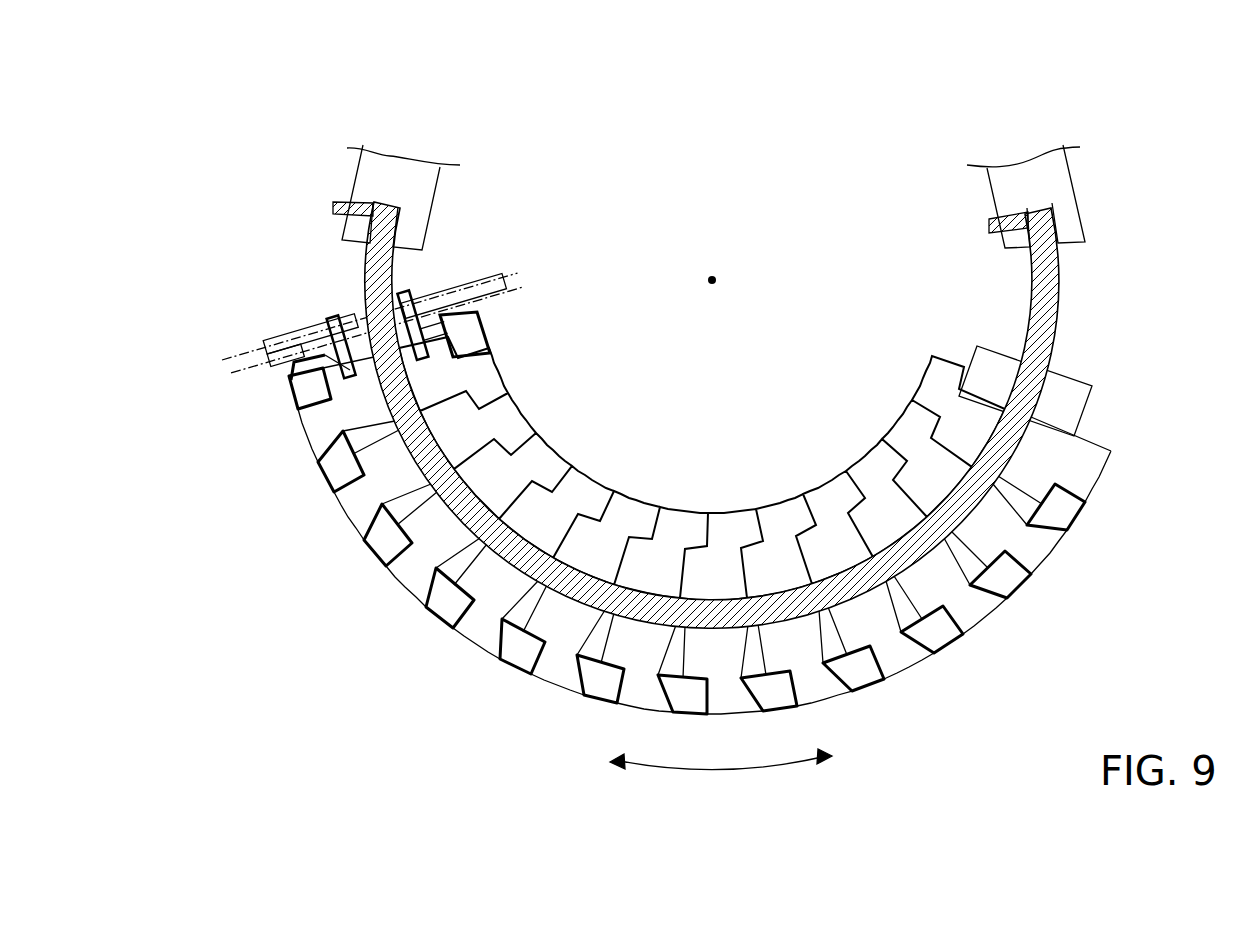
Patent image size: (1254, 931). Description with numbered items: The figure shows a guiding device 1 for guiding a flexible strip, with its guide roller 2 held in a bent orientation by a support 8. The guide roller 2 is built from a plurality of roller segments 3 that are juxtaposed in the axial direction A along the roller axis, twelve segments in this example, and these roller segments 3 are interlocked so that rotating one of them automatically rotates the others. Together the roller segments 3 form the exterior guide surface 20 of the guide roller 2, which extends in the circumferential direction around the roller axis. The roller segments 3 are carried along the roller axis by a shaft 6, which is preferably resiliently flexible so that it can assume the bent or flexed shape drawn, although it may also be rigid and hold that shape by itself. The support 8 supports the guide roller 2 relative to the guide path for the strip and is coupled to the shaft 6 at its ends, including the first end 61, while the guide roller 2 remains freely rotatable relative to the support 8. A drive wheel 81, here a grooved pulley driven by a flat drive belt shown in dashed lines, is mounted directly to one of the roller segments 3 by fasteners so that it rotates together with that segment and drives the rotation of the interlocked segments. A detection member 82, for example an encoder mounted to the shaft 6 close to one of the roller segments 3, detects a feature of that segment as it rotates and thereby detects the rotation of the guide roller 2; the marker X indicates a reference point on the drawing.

The guiding device 1 is at (214, 166).
The guide roller 2 is at (338, 580).
The roller segments 3 is at (547, 455).
The shaft 6 is at (1058, 318).
The support 8 is at (385, 160).
The exterior guide surface 20 is at (613, 495).
The first end 61 is at (400, 205).
The drive wheel 81 is at (297, 330).
The detection member 82 is at (1076, 398).
The axis of rotation X is at (724, 269).
The axial direction A is at (721, 777).